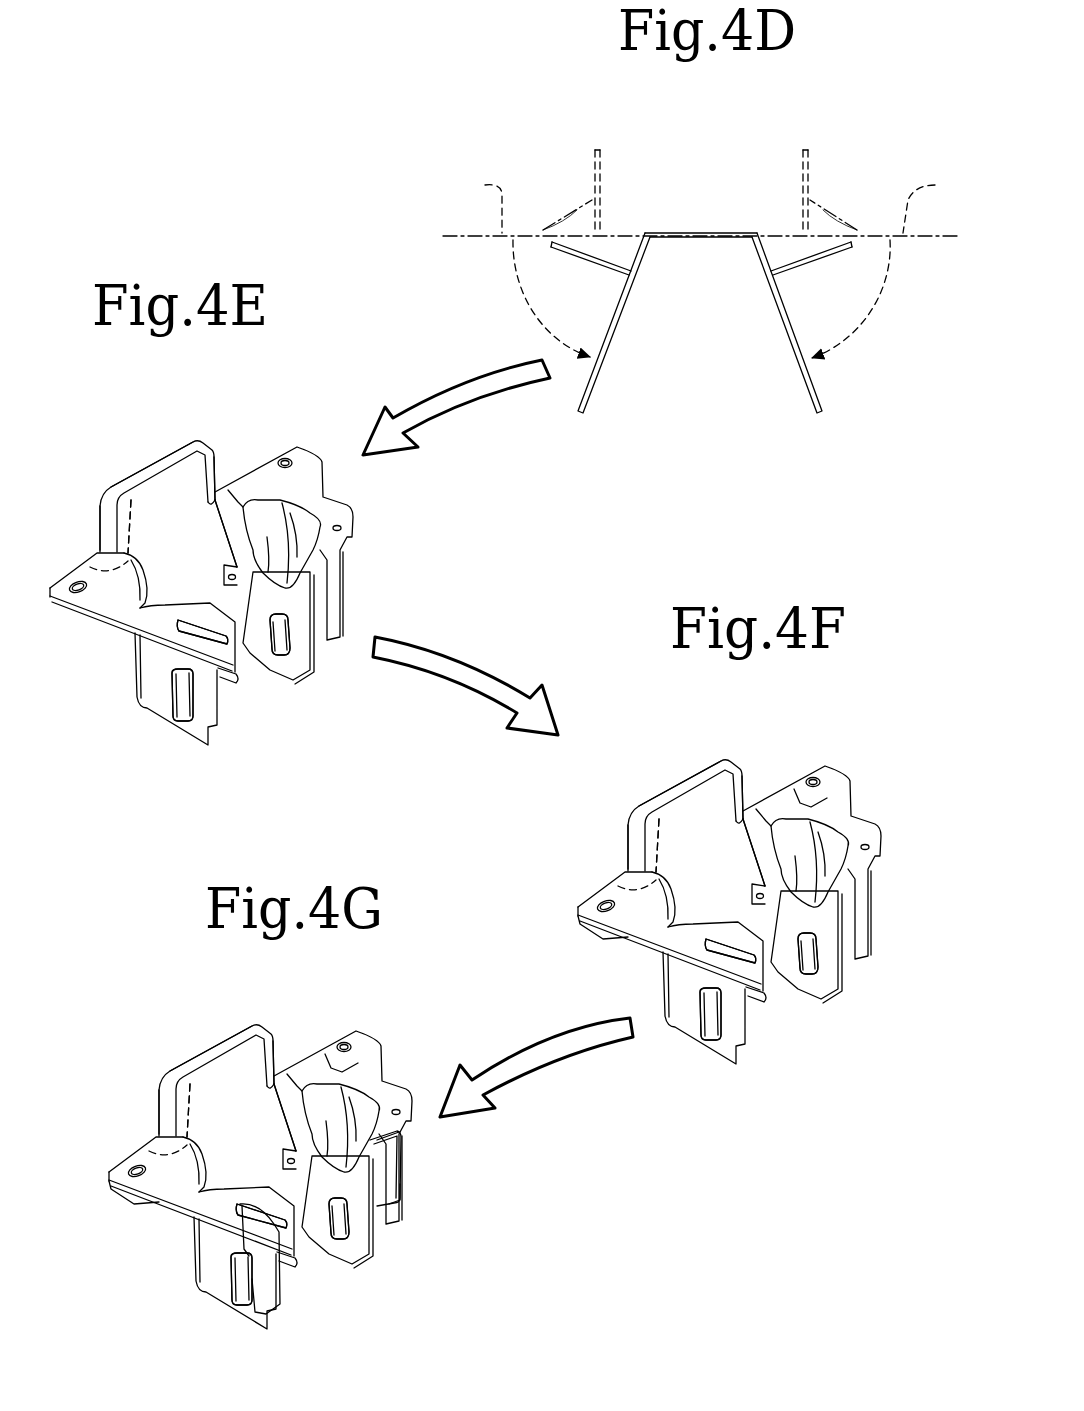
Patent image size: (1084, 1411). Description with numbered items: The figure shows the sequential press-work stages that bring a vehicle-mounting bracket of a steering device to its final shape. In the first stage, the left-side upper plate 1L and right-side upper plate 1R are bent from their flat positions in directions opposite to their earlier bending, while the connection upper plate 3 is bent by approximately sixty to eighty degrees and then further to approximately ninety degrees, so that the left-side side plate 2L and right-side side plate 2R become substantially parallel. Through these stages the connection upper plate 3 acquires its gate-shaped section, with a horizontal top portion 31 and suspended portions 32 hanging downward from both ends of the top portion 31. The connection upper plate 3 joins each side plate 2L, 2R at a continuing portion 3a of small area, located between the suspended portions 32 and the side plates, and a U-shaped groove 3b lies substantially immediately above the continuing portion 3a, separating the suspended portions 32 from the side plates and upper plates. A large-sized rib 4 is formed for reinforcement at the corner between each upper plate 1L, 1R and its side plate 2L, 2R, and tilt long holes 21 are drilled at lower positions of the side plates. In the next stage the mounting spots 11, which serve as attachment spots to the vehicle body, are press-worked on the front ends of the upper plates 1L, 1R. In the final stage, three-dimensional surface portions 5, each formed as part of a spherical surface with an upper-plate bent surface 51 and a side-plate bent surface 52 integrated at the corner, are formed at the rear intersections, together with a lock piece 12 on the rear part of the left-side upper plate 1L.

In FIG. 4D, the left-side upper plate 1L is at (603, 170).
In FIG. 4E, the left-side upper plate 1L is at (105, 600).
In FIG. 4F, the left-side upper plate 1L is at (672, 958).
In FIG. 4G, the left-side upper plate 1L is at (203, 1223).
In FIG. 4D, the right-side upper plate 1R is at (815, 162).
In FIG. 4E, the right-side upper plate 1R is at (270, 480).
In FIG. 4F, the right-side upper plate 1R is at (819, 851).
In FIG. 4G, the right-side upper plate 1R is at (347, 1117).
In FIG. 4D, the left-side side plate 2L is at (490, 186).
In FIG. 4E, the left-side side plate 2L is at (157, 700).
In FIG. 4F, the left-side side plate 2L is at (693, 1021).
In FIG. 4G, the left-side side plate 2L is at (224, 1286).
In FIG. 4D, the right-side side plate 2R is at (752, 400).
In FIG. 4E, the right-side side plate 2R is at (298, 640).
In FIG. 4F, the right-side side plate 2R is at (836, 949).
In FIG. 4G, the right-side side plate 2R is at (367, 1214).
In FIG. 4D, the connection upper plate 3 is at (685, 228).
In FIG. 4E, the connection upper plate 3 is at (158, 452).
In FIG. 4F, the connection upper plate 3 is at (696, 805).
In FIG. 4G, the connection upper plate 3 is at (227, 1070).
In FIG. 4E, the horizontal top portion 31 is at (152, 472).
In FIG. 4F, the horizontal top portion 31 is at (680, 771).
In FIG. 4G, the horizontal top portion 31 is at (211, 1036).
In FIG. 4E, the suspended portion 32 is at (210, 470).
In FIG. 4F, the suspended portion 32 is at (667, 794).
In FIG. 4G, the suspended portion 32 is at (198, 1059).
In FIG. 4E, the continuing portion 3a is at (95, 565).
In FIG. 4F, the continuing portion 3a is at (668, 867).
In FIG. 4G, the continuing portion 3a is at (199, 1132).
In FIG. 4E, the U-shaped groove 3b is at (127, 490).
In FIG. 4F, the U-shaped groove 3b is at (674, 819).
In FIG. 4G, the U-shaped groove 3b is at (205, 1084).
In FIG. 4D, the large-sized rib 4 is at (577, 210).
In FIG. 4E, the large-sized rib 4 is at (163, 603).
In FIG. 4F, the large-sized rib 4 is at (774, 857).
In FIG. 4G, the large-sized rib 4 is at (305, 1122).
In FIG. 4F, the mounting spot 11 is at (695, 829).
In FIG. 4G, the mounting spot 11 is at (229, 1095).
In FIG. 4E, the lock piece 12 is at (230, 663).
In FIG. 4F, the lock piece 12 is at (754, 1003).
In FIG. 4G, the lock piece 12 is at (225, 1231).
In FIG. 4E, the tilt long hole 21 is at (183, 708).
In FIG. 4F, the tilt long hole 21 is at (767, 1026).
In FIG. 4G, the tilt long hole 21 is at (298, 1291).
In FIG. 4G, the three-dimensional surface portion 5 is at (371, 1234).
In FIG. 4G, the upper-plate bent surface 51 is at (419, 1156).
In FIG. 4G, the side-plate bent surface 52 is at (433, 1203).